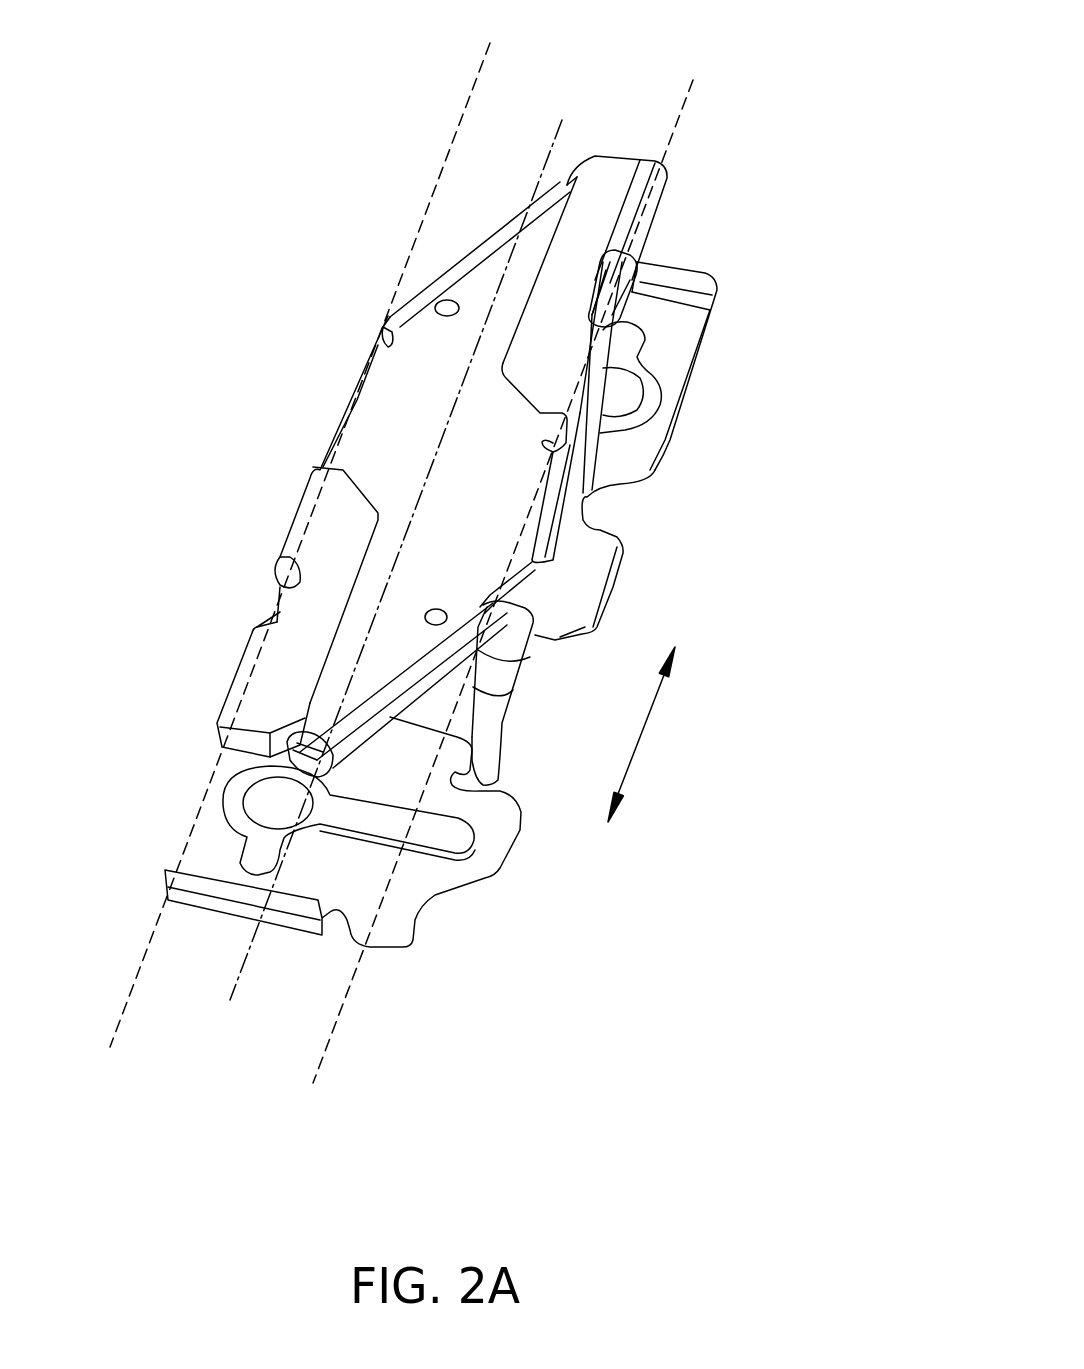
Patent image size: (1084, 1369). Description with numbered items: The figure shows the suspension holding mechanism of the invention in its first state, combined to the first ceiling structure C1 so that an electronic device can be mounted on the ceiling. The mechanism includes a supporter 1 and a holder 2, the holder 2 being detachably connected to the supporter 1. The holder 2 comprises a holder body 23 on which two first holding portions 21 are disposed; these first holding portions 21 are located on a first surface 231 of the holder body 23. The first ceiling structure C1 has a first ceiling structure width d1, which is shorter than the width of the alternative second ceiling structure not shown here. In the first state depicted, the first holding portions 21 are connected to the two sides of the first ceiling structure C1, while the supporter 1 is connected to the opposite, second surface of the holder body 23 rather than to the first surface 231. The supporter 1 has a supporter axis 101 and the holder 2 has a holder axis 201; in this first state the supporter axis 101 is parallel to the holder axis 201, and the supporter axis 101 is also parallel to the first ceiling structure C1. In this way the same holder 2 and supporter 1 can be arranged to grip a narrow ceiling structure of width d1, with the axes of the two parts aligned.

The supporter 1 is at (685, 440).
The holder 2 is at (455, 466).
The first holding portions 21 is at (270, 667).
The holder body 23 is at (537, 508).
The first surface 231 is at (393, 420).
The supporter axis 101 is at (647, 733).
The holder axis 201 is at (240, 977).
The first ceiling structure C1 is at (472, 91).
The first ceiling structure width d1 is at (691, 89).